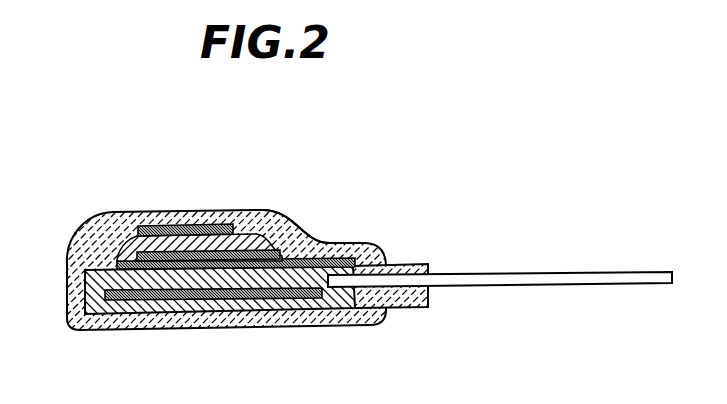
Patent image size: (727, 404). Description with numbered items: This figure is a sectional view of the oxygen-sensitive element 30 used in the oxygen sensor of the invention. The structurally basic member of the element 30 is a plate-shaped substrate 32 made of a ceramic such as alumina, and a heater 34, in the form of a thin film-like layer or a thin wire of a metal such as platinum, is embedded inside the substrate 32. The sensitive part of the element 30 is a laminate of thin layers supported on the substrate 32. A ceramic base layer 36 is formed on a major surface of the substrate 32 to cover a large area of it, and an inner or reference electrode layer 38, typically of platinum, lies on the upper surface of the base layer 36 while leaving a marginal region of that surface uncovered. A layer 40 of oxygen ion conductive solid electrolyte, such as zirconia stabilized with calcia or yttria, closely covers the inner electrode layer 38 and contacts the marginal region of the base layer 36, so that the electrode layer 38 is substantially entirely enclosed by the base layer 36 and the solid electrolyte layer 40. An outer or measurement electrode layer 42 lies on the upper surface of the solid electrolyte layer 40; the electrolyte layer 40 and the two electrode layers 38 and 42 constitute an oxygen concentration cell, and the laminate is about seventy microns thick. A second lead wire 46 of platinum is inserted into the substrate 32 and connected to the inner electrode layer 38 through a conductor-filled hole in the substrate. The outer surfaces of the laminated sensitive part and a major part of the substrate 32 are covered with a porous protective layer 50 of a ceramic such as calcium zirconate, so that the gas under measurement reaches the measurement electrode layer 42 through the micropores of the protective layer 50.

The oxygen-sensitive element 30 is at (322, 233).
The plate-shaped substrate 32 is at (407, 308).
The heater 34 is at (283, 299).
The base layer 36 is at (118, 268).
The inner electrode layer 38 is at (136, 258).
The solid electrolyte layer 40 is at (264, 238).
The outer electrode layer 42 is at (226, 226).
The second lead wire 46 is at (533, 273).
The porous protective layer 50 is at (183, 211).